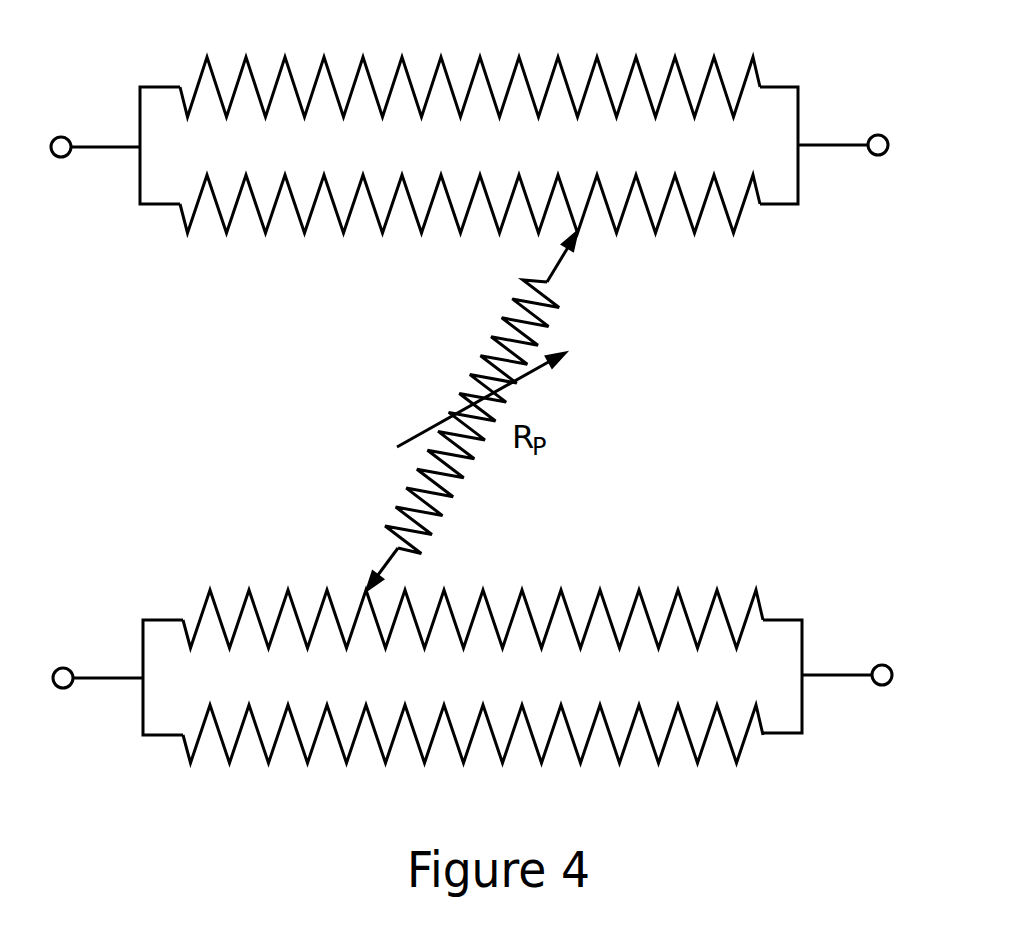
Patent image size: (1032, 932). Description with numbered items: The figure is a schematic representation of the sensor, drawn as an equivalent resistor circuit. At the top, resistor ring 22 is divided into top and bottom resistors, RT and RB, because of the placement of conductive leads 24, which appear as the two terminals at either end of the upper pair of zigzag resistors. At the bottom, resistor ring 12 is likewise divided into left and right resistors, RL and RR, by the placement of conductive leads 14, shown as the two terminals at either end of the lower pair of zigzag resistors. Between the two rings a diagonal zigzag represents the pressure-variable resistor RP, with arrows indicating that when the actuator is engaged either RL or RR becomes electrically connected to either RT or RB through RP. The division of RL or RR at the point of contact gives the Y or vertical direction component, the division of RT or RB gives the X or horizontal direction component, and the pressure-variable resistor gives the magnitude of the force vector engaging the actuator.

The resistor ring 22 is at (722, 192).
The conductive leads 24 is at (475, 146).
The resistor ring 12 is at (200, 730).
The conductive leads 14 is at (468, 675).